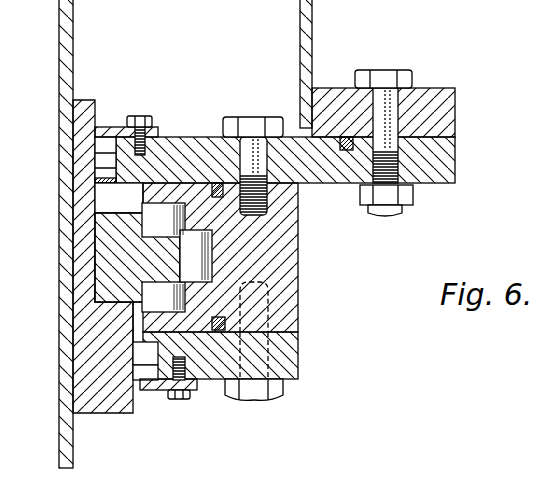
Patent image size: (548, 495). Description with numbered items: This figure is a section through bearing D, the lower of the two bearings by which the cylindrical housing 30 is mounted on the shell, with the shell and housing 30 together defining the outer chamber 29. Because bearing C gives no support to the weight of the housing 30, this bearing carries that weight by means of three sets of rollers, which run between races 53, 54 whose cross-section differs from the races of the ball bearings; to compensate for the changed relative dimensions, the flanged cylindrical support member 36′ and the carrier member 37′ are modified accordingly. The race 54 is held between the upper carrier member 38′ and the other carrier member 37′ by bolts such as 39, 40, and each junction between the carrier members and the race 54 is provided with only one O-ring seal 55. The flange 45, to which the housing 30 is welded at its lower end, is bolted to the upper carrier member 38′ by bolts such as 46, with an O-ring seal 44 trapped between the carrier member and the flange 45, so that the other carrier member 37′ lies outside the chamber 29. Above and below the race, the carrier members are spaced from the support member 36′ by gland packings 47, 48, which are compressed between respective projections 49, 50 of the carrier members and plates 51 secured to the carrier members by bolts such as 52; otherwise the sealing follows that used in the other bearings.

The outer chamber 29 is at (185, 34).
The cylindrical housing 30 is at (312, 15).
The support member 36′ is at (83, 283).
The carrier member 37′ is at (300, 357).
The upper carrier member 38′ is at (440, 157).
The bolt 39 is at (280, 390).
The bolt 40 is at (252, 118).
The O-ring seal 44 is at (345, 137).
The flange 45 is at (440, 113).
The bolt 46 is at (403, 80).
The gland packing 47 is at (143, 359).
The gland packing 48 is at (107, 157).
The projection 49 is at (133, 334).
The projection 50 is at (97, 181).
The plate 51 is at (110, 127).
The bolt 52 is at (147, 117).
The race 53 is at (107, 237).
The race 54 is at (287, 281).
The O-ring seal 55 is at (215, 183).